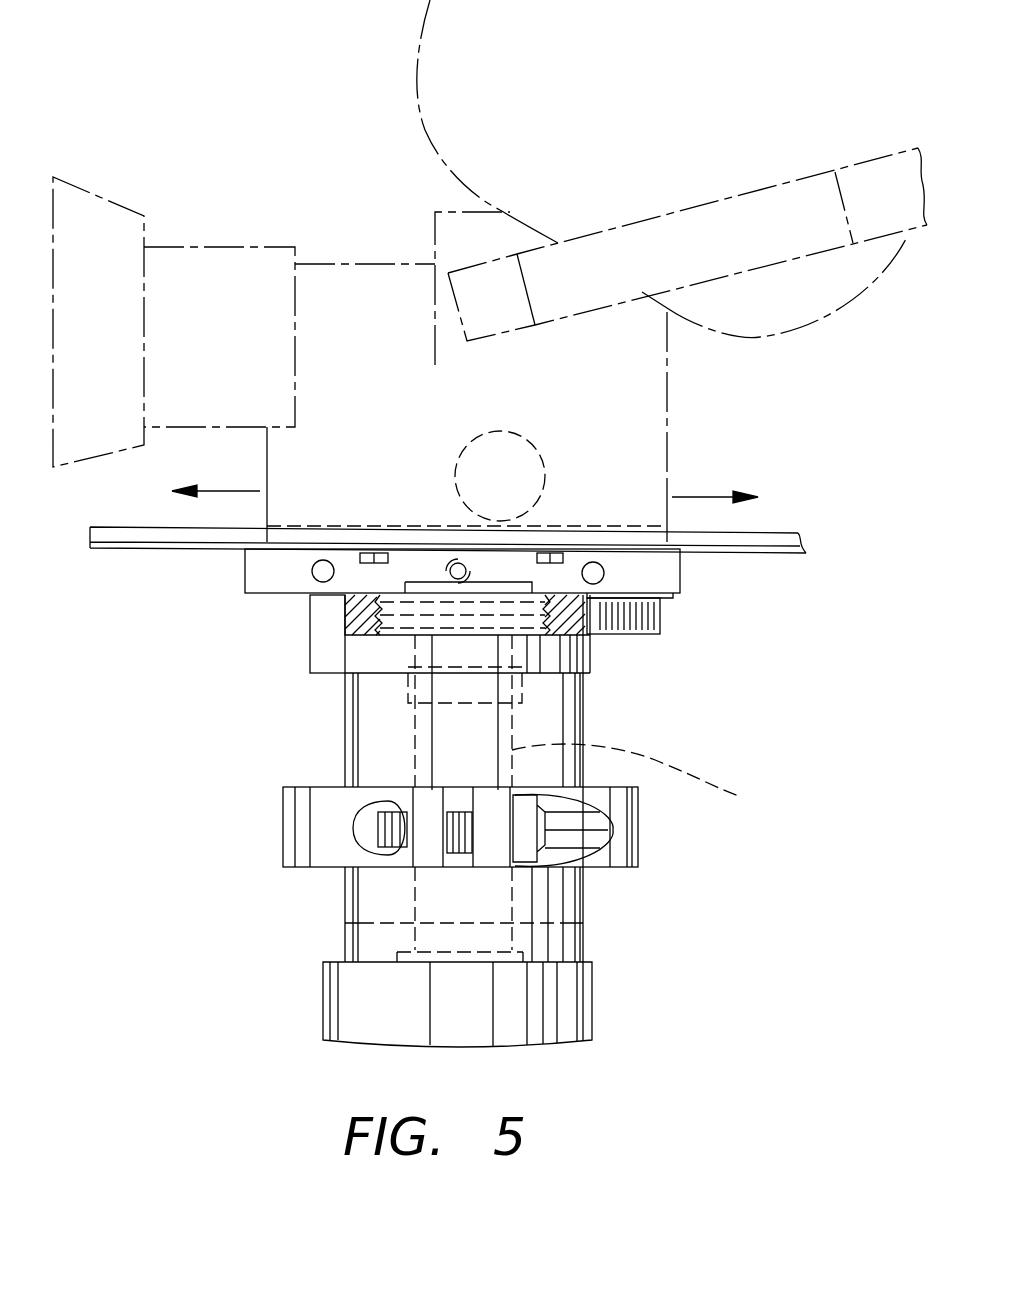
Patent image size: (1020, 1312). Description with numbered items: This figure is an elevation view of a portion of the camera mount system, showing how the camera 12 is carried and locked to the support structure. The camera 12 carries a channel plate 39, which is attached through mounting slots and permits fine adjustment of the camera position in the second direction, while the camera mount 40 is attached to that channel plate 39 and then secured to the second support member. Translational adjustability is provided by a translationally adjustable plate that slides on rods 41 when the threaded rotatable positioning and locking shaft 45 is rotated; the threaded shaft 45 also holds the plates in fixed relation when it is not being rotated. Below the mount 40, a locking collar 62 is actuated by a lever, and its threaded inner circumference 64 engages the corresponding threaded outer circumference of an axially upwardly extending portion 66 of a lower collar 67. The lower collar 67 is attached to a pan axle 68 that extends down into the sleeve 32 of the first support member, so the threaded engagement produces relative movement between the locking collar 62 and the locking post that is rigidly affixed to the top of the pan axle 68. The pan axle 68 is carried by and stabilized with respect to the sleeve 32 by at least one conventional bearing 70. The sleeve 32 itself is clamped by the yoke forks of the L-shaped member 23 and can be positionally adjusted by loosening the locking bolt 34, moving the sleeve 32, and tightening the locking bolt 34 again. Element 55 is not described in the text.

The camera 12 is at (690, 430).
The L-shaped member 23 is at (638, 825).
The sleeve 32 is at (345, 758).
The locking bolt 34 is at (545, 840).
The channel plate 39 is at (763, 532).
The camera mount 40 is at (712, 567).
The rods 41 is at (312, 571).
The threaded rotatable positioning and locking shaft 45 is at (450, 572).
The locating tabs 55 is at (560, 566).
The locking collar 62 is at (582, 616).
The threaded inner circumference 64 is at (385, 600).
The axially upwardly extending portion 66 is at (435, 620).
The lower collar 67 is at (560, 657).
The pan axle 68 is at (642, 778).
The bearing 70 is at (415, 697).